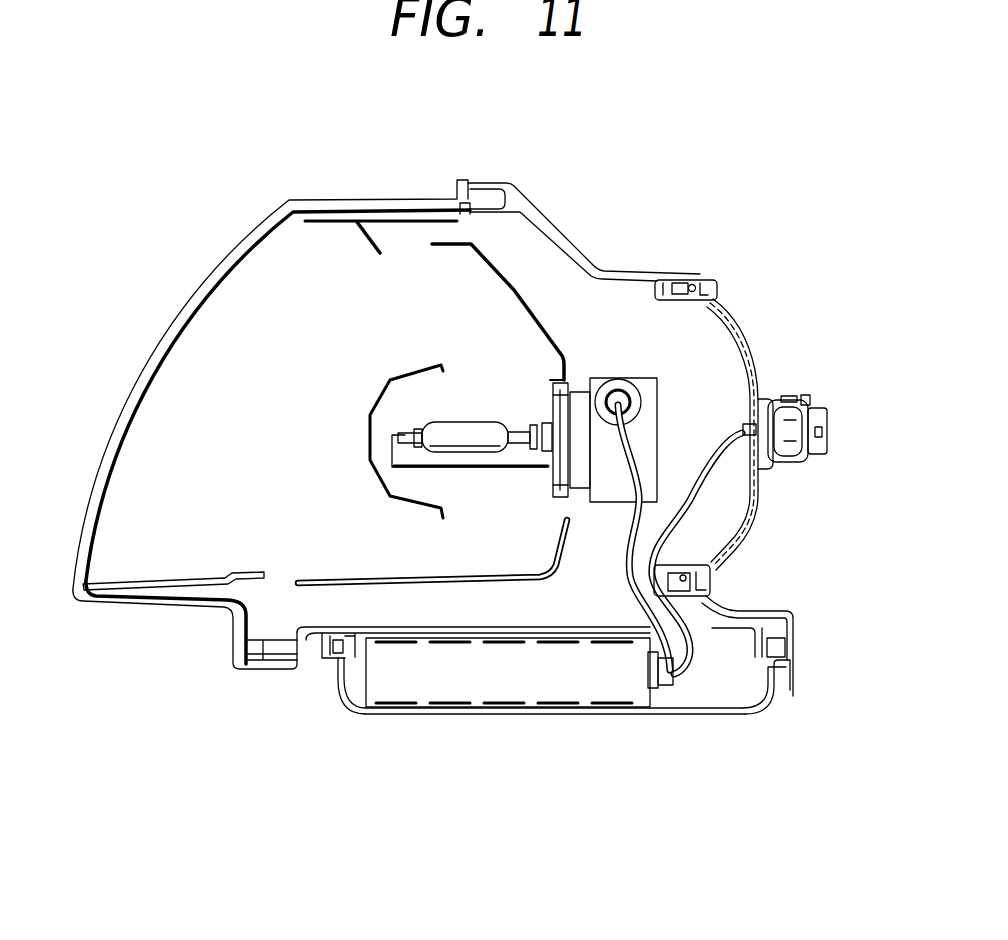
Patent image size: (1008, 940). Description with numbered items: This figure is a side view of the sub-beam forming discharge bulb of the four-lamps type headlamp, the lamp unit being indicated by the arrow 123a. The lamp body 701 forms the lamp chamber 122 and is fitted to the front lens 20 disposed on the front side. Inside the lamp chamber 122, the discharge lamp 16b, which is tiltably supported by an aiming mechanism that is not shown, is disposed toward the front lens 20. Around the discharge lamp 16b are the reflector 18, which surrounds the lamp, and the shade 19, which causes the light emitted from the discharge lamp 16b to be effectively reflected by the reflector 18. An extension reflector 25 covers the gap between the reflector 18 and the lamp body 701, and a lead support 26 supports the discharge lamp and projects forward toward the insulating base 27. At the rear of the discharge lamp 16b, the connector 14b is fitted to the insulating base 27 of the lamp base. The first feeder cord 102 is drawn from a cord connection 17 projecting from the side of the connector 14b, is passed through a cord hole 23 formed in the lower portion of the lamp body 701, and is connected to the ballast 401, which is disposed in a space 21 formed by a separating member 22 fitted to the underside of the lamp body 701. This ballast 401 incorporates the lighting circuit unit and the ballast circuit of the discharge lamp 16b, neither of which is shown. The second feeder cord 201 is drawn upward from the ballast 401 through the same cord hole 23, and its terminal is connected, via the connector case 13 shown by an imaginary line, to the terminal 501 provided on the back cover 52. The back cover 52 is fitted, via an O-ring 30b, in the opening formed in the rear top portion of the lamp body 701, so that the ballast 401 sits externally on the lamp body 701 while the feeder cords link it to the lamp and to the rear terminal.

The vehicle lamp 123a is at (382, 160).
The lamp body 701 is at (571, 238).
The reflector 18 is at (507, 268).
The O-ring 30b is at (702, 279).
The front lens 20 is at (168, 330).
The extension reflector 25 is at (312, 224).
The insulating base 27 is at (580, 382).
The connector 14b is at (648, 378).
The connector case 13 is at (743, 420).
The back cover 52 is at (758, 380).
The terminal 501 is at (788, 440).
The shade 19 is at (385, 381).
The discharge lamp 16b is at (475, 430).
The lamp chamber 122 is at (306, 434).
The cord connection 17 is at (632, 410).
The lead support 26 is at (415, 470).
The second feeder cord 201 is at (700, 500).
The first feeder cord 102 is at (620, 575).
The ballast 401 is at (473, 693).
The separating member 22 is at (652, 716).
The cord hole 23 is at (703, 640).
The space 21 is at (748, 693).